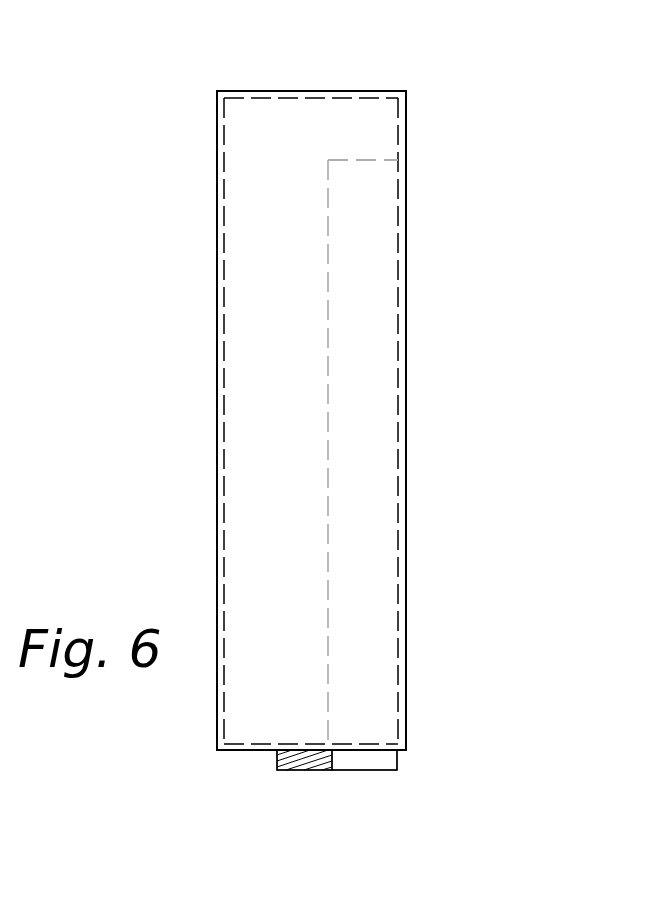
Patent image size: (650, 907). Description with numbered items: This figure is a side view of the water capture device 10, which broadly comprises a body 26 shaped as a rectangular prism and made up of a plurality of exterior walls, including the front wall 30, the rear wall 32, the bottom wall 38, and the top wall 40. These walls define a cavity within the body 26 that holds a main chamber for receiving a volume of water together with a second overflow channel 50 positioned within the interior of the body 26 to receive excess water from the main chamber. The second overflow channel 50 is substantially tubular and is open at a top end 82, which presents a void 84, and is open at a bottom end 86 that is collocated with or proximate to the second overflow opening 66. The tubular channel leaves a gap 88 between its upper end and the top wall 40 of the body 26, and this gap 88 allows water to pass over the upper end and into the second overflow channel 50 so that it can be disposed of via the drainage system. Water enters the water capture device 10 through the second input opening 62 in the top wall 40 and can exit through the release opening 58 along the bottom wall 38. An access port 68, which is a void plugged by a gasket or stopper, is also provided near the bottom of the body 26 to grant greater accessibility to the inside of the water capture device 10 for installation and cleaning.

The water capture device 10 is at (566, 160).
The body 26 is at (217, 220).
The front wall 30 is at (217, 368).
The rear wall 32 is at (406, 360).
The bottom wall 38 is at (227, 751).
The top wall 40 is at (243, 90).
The second overflow channel 50 is at (363, 472).
The release opening 58 is at (303, 778).
The second input opening 62 is at (361, 85).
The second overflow opening 66 is at (380, 778).
The access port 68 is at (277, 760).
The top end 82 is at (370, 167).
The void 84 is at (345, 146).
The bottom end 86 is at (367, 718).
The gap 88 is at (367, 133).